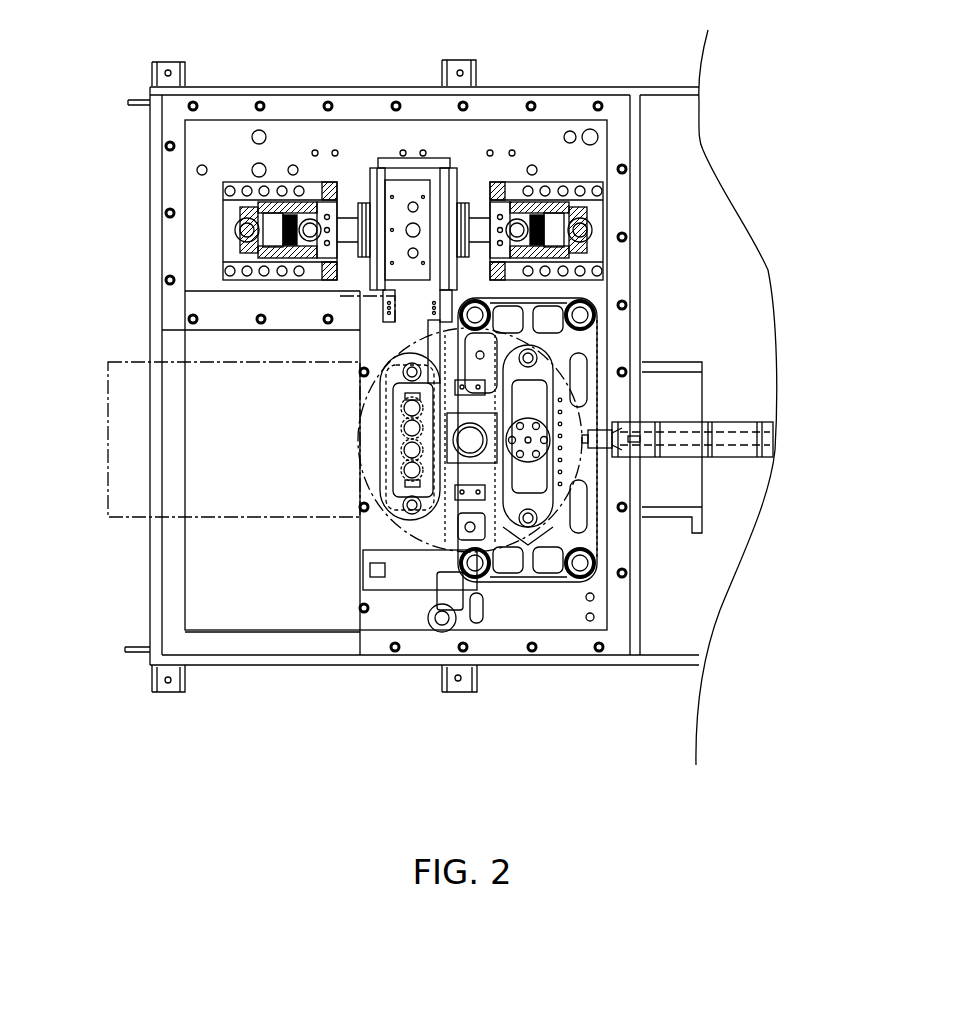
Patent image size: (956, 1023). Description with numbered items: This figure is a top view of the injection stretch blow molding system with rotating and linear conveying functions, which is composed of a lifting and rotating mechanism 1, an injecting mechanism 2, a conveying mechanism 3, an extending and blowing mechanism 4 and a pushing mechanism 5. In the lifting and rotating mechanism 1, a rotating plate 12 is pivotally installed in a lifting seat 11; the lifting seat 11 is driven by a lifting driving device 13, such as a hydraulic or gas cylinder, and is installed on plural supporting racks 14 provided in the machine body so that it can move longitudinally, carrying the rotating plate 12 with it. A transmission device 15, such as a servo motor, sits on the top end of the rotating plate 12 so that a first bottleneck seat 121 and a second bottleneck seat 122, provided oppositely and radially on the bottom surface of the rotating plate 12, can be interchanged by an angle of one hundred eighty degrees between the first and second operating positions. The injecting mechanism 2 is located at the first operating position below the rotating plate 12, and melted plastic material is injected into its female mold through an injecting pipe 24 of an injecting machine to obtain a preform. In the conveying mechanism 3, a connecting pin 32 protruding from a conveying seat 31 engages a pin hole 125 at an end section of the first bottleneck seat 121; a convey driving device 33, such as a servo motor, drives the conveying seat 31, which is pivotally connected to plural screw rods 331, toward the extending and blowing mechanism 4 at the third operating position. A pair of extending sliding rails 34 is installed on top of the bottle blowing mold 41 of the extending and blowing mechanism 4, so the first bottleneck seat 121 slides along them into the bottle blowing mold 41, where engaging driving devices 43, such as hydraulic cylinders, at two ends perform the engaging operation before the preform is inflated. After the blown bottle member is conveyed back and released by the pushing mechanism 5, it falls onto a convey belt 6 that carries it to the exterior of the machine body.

The lifting and rotating mechanism 1 is at (575, 348).
The injecting mechanism 2 is at (560, 398).
The conveying mechanism 3 is at (401, 345).
The extending and blowing mechanism 4 is at (416, 192).
The pushing mechanism 5 is at (385, 413).
The convey belt 6 is at (122, 498).
The lifting seat 11 is at (380, 528).
The rotating plate 12 is at (560, 540).
The lifting driving device 13 is at (530, 412).
The supporting racks 14 is at (546, 510).
The transmission device 15 is at (390, 434).
The injecting pipe 24 is at (643, 422).
The conveying seat 31 is at (395, 490).
The connecting pin 32 is at (395, 516).
The convey driving device 33 is at (443, 598).
The extending sliding rails 34 is at (383, 320).
The bottle blowing mold 41 is at (425, 200).
The engaging driving devices 43 is at (292, 192).
The first bottleneck seat 121 is at (555, 468).
The second bottleneck seat 122 is at (365, 398).
The pin hole 125 is at (385, 500).
The screw rods 331 is at (453, 537).